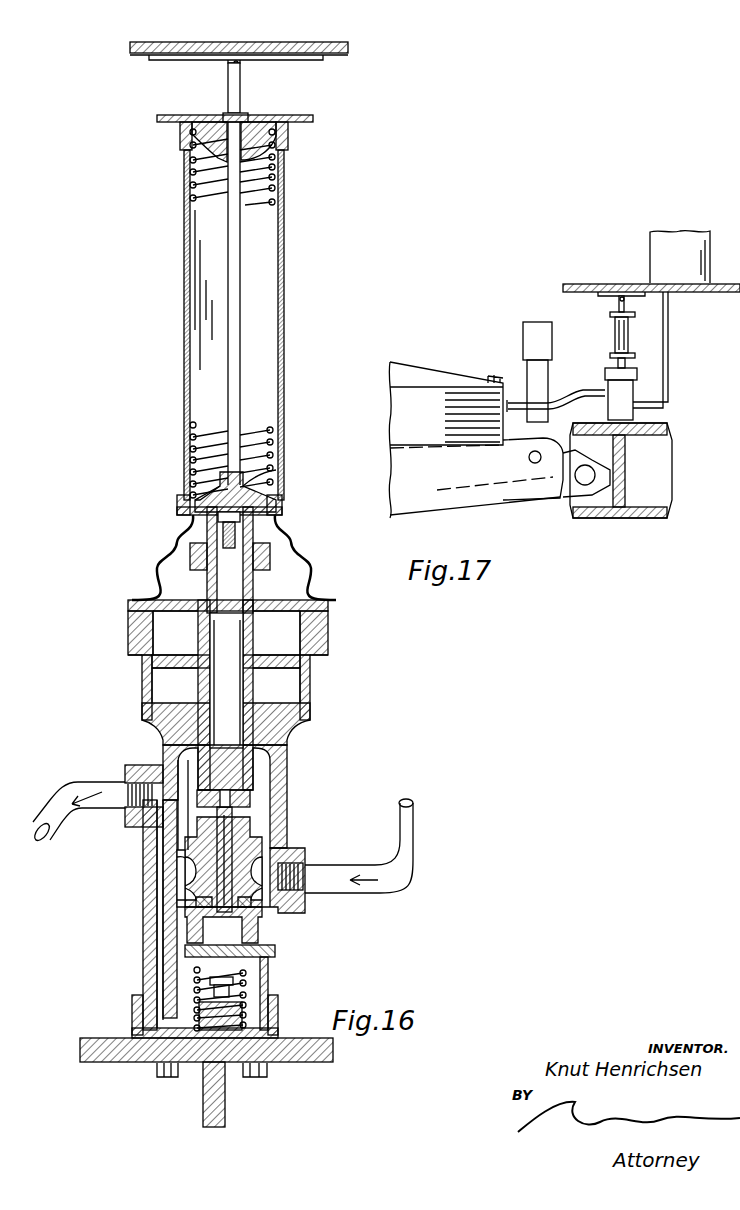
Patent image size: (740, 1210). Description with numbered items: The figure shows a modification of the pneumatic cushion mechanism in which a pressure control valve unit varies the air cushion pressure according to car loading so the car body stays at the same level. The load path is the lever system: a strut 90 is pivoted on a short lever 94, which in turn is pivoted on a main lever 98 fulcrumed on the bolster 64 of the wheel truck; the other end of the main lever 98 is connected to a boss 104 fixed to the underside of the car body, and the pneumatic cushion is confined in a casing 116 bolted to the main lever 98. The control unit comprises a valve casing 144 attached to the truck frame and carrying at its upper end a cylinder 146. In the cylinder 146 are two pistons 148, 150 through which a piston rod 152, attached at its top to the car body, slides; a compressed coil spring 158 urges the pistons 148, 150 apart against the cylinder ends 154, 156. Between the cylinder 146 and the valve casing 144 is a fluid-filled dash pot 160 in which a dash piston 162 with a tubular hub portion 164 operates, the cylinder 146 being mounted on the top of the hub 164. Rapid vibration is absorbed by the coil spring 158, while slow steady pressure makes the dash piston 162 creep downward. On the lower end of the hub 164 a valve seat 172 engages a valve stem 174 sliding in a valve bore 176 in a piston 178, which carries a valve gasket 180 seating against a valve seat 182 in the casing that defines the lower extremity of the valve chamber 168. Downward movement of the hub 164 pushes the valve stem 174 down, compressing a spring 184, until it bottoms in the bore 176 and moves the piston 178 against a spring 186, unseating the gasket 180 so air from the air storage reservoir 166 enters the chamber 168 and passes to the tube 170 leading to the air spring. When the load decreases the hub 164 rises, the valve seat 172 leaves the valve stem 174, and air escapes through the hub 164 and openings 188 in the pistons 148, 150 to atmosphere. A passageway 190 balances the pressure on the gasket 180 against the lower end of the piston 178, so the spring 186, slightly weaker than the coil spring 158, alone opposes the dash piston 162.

In FIG. 16, the bolster 64 is at (290, 1068).
In FIG. 17, the bolster 64 is at (638, 518).
In FIG. 17, the strut 90 is at (532, 374).
In FIG. 17, the short lever 94 is at (498, 490).
In FIG. 17, the main lever 98 is at (555, 498).
In FIG. 16, the boss 104 is at (300, 43).
In FIG. 17, the boss 104 is at (588, 284).
In FIG. 17, the casing 116 is at (426, 373).
In FIG. 16, the valve casing 144 is at (148, 991).
In FIG. 17, the valve casing 144 is at (626, 416).
In FIG. 16, the cylinder 146 is at (284, 272).
In FIG. 17, the cylinder 146 is at (616, 328).
In FIG. 16, the piston 148 is at (180, 513).
In FIG. 16, the piston 150 is at (208, 117).
In FIG. 16, the piston rod 152 is at (243, 90).
In FIG. 17, the piston rod 152 is at (618, 300).
In FIG. 16, the cylinder end 154 is at (279, 518).
In FIG. 16, the cylinder end 156 is at (283, 117).
In FIG. 16, the coil spring 158 is at (284, 186).
In FIG. 16, the dash pot 160 is at (152, 707).
In FIG. 16, the dash piston 162 is at (150, 677).
In FIG. 16, the tubular hub portion 164 is at (203, 647).
In FIG. 17, the air storage reservoir 166 is at (660, 250).
In FIG. 16, the valve chamber 168 is at (276, 783).
In FIG. 16, the tube 170 is at (92, 786).
In FIG. 17, the tube 170 is at (592, 395).
In FIG. 16, the valve seat 172 is at (240, 805).
In FIG. 16, the valve stem 174 is at (245, 828).
In FIG. 16, the valve bore 176 is at (200, 904).
In FIG. 16, the piston 178 is at (278, 918).
In FIG. 16, the valve gasket 180 is at (184, 872).
In FIG. 16, the valve seat 182 is at (184, 856).
In FIG. 16, the spring 184 is at (193, 890).
In FIG. 16, the spring 186 is at (258, 980).
In FIG. 16, the openings 188 is at (200, 486).
In FIG. 16, the passageway 190 is at (162, 849).